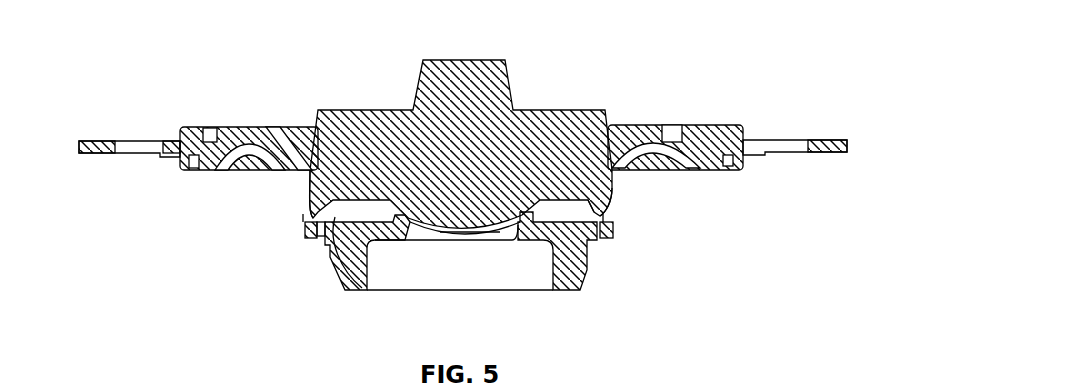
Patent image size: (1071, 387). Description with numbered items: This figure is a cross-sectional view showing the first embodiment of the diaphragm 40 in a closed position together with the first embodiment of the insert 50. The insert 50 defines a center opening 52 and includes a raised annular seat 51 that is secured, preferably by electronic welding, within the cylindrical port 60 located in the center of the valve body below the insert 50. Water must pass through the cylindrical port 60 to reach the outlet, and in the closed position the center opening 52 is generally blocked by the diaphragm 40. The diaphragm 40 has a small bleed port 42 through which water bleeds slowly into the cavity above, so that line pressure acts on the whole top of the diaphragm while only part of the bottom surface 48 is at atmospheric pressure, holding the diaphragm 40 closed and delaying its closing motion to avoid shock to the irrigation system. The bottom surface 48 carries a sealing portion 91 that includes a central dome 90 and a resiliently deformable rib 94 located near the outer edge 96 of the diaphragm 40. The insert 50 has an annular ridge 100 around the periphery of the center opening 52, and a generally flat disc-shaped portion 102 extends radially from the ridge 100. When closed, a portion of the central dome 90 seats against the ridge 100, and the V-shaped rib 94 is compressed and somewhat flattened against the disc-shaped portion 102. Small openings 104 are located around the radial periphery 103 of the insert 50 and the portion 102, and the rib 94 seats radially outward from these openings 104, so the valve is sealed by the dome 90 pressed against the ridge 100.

The diaphragm 40 is at (592, 110).
The bleed port 42 is at (676, 114).
The bottom surface 48 is at (627, 188).
The insert 50 is at (450, 278).
The raised annular seat 51 is at (587, 278).
The center opening 52 is at (486, 240).
The cylindrical port 60 is at (417, 270).
The central dome 90 is at (447, 228).
The sealing portion 91 is at (624, 200).
The rib 94 is at (308, 210).
The outer edge 96 is at (308, 205).
The annular ridge 100 is at (510, 233).
The disc-shaped portion 102 is at (364, 292).
The radial periphery 103 is at (305, 232).
The openings 104 is at (319, 249).